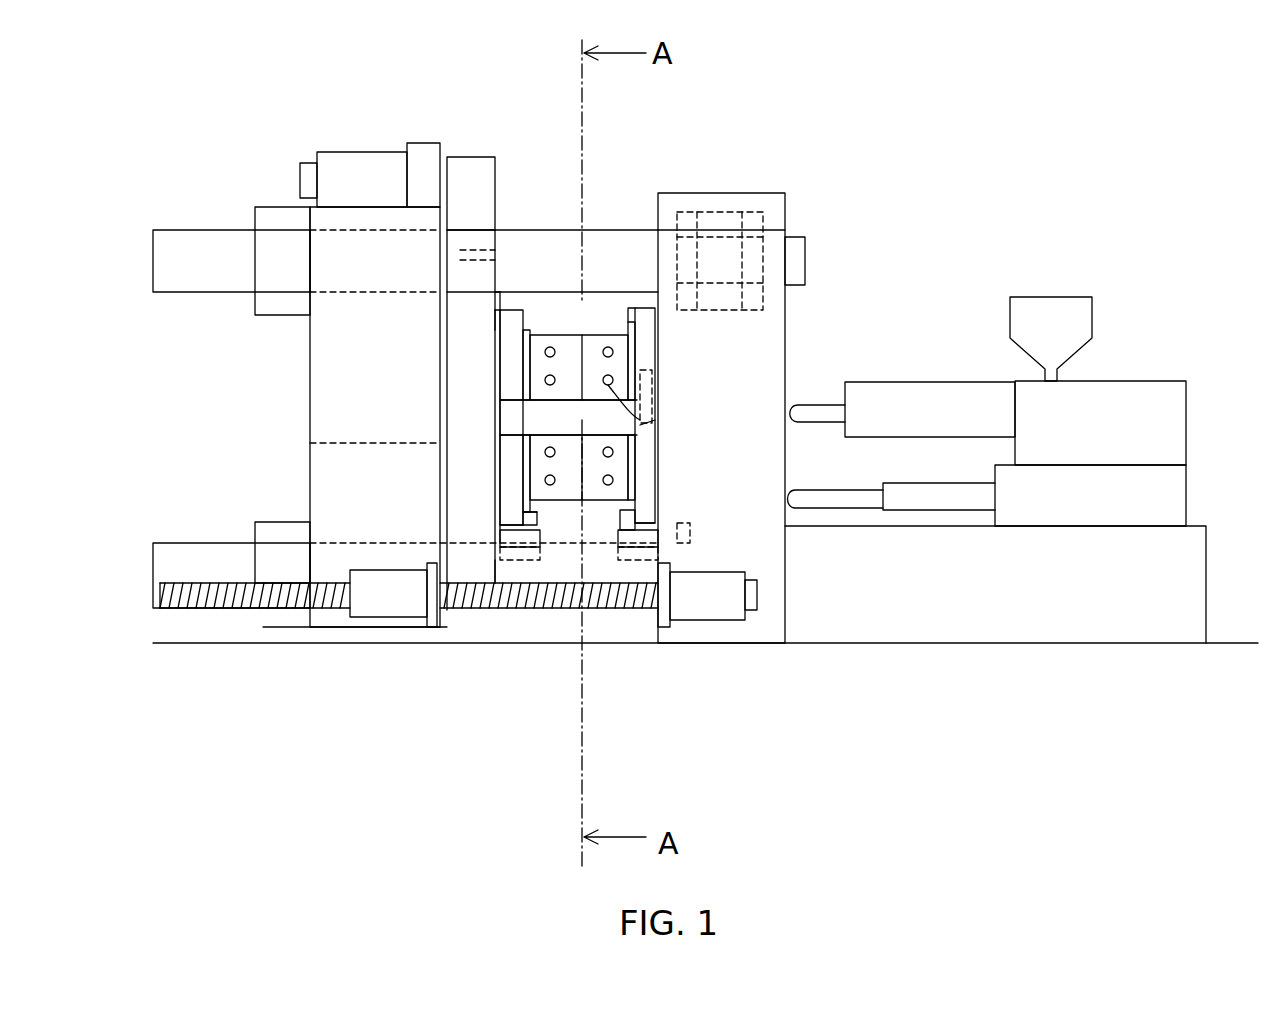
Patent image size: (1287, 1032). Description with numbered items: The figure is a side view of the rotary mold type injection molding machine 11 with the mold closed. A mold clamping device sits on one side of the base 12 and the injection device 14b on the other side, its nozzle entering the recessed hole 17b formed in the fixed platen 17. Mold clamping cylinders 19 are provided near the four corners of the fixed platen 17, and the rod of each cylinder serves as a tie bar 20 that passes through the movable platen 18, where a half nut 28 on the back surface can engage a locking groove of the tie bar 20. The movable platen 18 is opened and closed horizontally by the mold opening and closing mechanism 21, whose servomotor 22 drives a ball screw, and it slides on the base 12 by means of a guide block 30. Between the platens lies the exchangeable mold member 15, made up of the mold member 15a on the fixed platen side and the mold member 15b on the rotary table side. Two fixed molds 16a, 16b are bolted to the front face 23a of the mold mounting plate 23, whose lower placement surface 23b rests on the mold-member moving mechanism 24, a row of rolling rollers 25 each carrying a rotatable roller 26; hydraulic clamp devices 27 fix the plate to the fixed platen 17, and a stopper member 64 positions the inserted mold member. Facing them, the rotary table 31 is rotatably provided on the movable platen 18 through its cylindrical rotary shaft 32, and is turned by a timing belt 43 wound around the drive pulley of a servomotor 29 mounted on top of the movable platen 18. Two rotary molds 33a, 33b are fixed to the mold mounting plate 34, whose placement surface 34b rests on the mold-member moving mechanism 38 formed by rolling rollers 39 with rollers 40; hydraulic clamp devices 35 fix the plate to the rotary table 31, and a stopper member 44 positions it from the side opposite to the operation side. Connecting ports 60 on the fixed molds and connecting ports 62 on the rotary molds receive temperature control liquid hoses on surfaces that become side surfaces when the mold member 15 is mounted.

The rotary mold type injection molding machine 11 is at (862, 158).
The base 12 is at (1236, 640).
The injection device 14b is at (969, 386).
The mold member 15 is at (600, 610).
The mold member on fixed platen side 15a is at (662, 336).
The mold member on rotary table side 15b is at (285, 612).
The fixed mold 16a is at (603, 335).
The fixed mold 16b is at (588, 502).
The fixed platen 17 is at (760, 193).
The recessed hole 17b is at (655, 420).
The movable platen 18 is at (303, 218).
The mold clamping cylinder 19 is at (712, 233).
The tie bar 20 is at (217, 250).
The mold opening and closing mechanism 21 is at (262, 614).
The servomotor 22 is at (700, 600).
The mold mounting plate 23 is at (650, 355).
The front face 23a is at (628, 323).
The placement surface 23b is at (675, 517).
The mold-member moving mechanism 24 is at (622, 555).
The rolling roller 25 is at (665, 575).
The roller 26 is at (660, 560).
The hydraulic clamp device 27 is at (640, 308).
The half nut 28 is at (278, 222).
The servomotor 29 is at (343, 170).
The guide block 30 is at (505, 417).
The rotary table 31 is at (440, 329).
The rotary shaft 32 is at (390, 427).
The rotary mold 33a is at (566, 335).
The rotary mold 33b is at (580, 522).
The mold mounting plate 34 is at (495, 352).
The placement surface 34b is at (500, 493).
The hydraulic clamp device 35 is at (532, 330).
The mold-member moving mechanism 38 is at (497, 532).
The rolling roller 39 is at (500, 530).
The roller 40 is at (530, 528).
The timing belt 43 is at (473, 213).
The stopper member 44 is at (500, 443).
The connecting port 60 is at (640, 420).
The connecting port 62 is at (495, 378).
The stopper member 64 is at (817, 390).